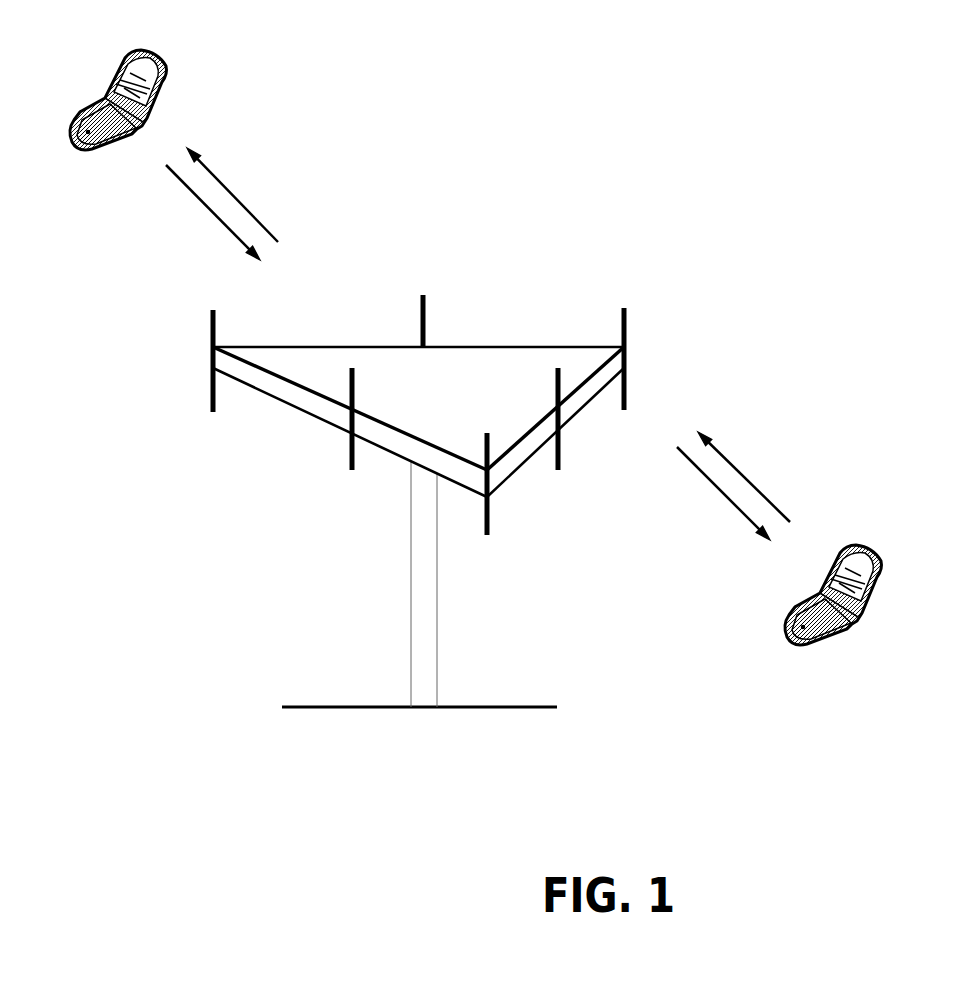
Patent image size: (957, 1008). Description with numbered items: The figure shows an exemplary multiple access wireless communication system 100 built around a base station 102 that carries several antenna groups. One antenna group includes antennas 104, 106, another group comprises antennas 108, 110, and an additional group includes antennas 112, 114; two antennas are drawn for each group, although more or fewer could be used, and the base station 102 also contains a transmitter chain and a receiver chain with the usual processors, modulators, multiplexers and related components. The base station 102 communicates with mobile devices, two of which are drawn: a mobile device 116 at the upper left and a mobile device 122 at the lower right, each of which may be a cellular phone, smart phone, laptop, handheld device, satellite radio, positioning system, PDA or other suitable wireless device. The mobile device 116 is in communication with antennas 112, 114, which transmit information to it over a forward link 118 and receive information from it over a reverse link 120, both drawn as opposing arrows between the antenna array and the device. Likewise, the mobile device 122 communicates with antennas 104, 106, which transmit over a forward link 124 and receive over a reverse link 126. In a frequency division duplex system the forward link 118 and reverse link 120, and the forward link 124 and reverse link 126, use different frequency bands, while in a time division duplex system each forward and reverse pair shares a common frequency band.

The wireless communication system 100 is at (595, 99).
The base station 102 is at (437, 707).
The antenna 104 is at (624, 310).
The antenna 106 is at (558, 445).
The antenna 108 is at (487, 510).
The antenna 110 is at (352, 470).
The antenna 112 is at (213, 310).
The antenna 114 is at (423, 312).
The mobile device 116 is at (128, 53).
The forward link 118 is at (233, 195).
The reverse link 120 is at (225, 225).
The mobile device 122 is at (840, 548).
The forward link 124 is at (730, 507).
The reverse link 126 is at (737, 470).